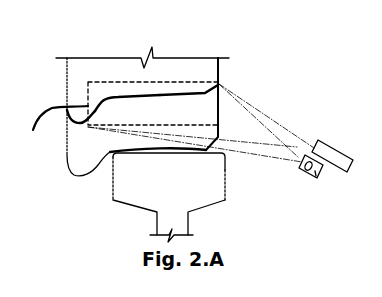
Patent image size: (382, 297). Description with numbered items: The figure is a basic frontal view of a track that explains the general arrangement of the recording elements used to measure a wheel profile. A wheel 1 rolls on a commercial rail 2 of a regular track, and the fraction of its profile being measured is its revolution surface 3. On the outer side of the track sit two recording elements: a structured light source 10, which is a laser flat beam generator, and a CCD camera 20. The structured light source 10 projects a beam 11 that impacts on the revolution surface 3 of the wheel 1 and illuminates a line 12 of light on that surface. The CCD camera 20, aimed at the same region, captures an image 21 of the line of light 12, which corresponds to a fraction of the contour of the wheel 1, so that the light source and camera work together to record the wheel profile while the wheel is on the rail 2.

The wheel 1 is at (197, 71).
The line of light 12 is at (118, 96).
The image 21 is at (55, 131).
The beam 11 is at (287, 137).
The structured light source 10 is at (344, 157).
The CCD camera 20 is at (311, 180).
The rail 2 is at (170, 187).
The revolution surface 3 is at (103, 168).